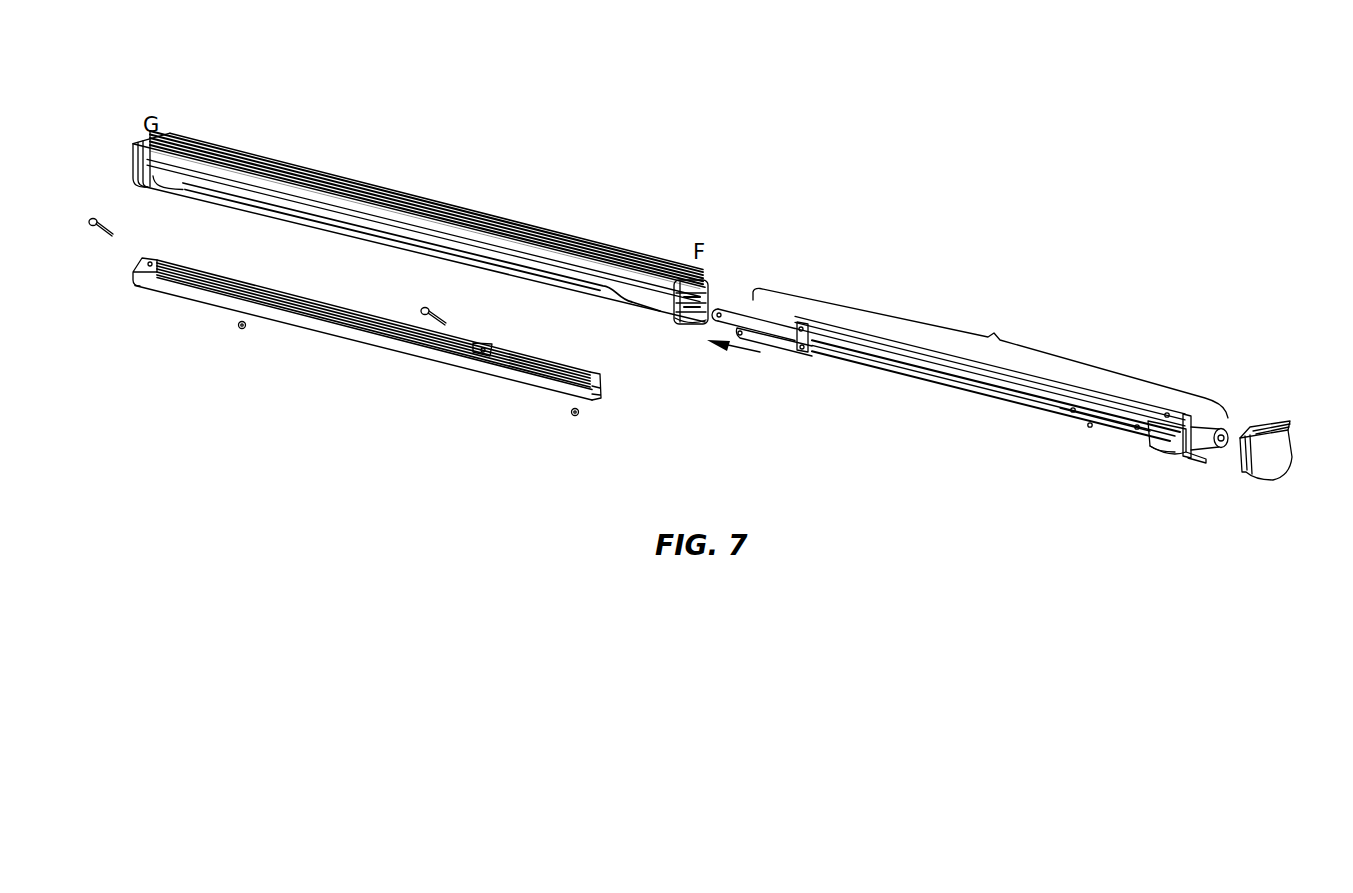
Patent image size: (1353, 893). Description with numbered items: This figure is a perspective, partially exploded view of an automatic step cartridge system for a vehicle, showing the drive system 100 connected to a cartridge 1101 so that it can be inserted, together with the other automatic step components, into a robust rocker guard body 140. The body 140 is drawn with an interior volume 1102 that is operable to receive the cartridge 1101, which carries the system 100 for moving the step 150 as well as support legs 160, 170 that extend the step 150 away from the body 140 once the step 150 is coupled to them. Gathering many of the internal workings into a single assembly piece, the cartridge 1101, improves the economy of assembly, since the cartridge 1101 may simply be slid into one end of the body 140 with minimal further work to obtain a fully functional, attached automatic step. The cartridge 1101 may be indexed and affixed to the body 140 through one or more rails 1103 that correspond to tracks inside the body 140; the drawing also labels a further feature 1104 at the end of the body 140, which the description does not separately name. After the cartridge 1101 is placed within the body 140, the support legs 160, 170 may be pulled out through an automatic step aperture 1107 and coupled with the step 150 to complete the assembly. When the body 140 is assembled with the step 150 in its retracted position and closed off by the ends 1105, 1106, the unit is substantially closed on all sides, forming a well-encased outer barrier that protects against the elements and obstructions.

The system 100 is at (1192, 455).
The rocker guard body 140 is at (660, 316).
The step 150 is at (400, 347).
The support leg 160 is at (813, 352).
The support leg 170 is at (1105, 430).
The cartridge 1101 is at (990, 353).
The interior volume 1102 is at (707, 303).
The rail 1103 is at (1010, 385).
The housing end face 1104 is at (684, 322).
The end 1105 is at (1270, 468).
The end 1106 is at (133, 152).
The automatic step aperture 1107 is at (483, 260).